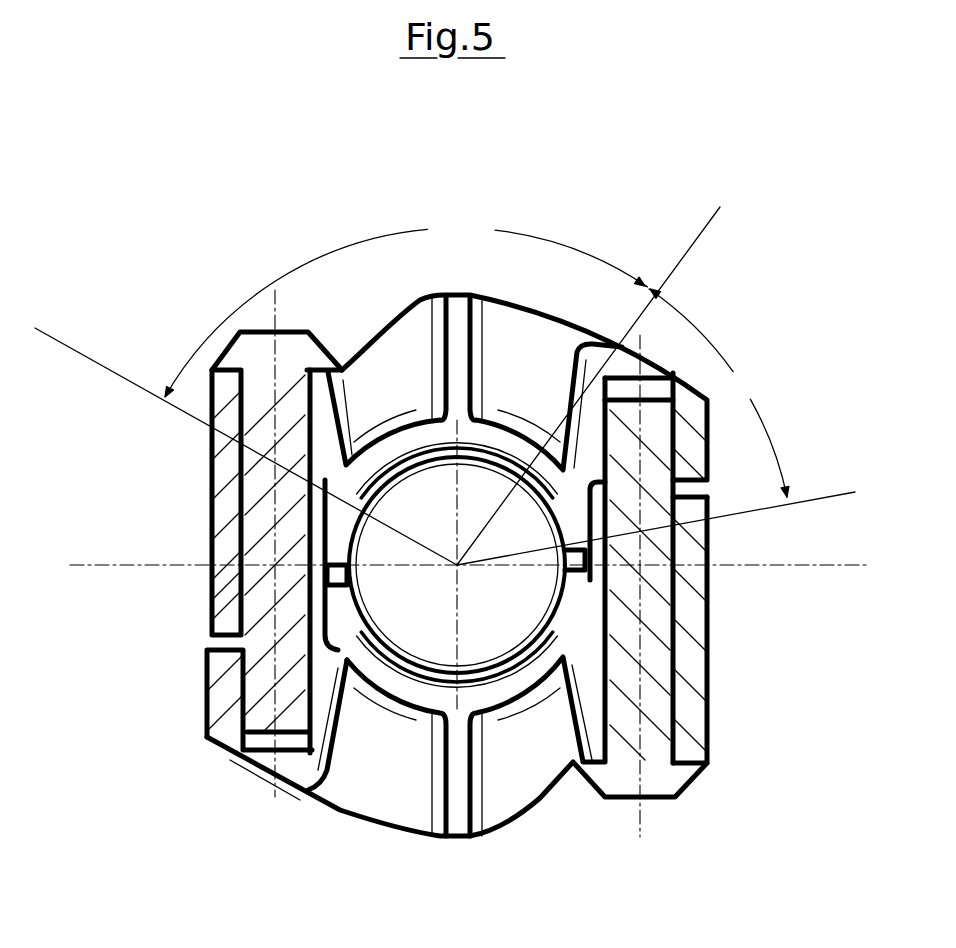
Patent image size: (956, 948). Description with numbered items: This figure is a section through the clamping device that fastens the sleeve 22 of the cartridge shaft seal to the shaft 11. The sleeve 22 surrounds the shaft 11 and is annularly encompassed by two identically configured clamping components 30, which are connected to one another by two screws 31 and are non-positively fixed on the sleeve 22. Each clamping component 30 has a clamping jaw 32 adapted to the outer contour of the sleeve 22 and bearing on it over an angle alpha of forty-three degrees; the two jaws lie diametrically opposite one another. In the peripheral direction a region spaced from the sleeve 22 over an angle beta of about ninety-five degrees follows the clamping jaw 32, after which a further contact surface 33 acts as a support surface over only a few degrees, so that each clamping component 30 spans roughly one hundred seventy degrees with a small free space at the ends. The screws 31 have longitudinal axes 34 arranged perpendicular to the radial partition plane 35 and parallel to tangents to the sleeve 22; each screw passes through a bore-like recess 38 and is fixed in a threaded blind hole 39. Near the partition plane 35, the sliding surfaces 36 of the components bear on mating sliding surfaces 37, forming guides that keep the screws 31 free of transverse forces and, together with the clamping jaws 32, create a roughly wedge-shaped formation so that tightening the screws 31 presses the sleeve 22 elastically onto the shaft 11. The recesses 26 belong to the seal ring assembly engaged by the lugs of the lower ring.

The shaft 11 is at (428, 630).
The sleeve 22 is at (513, 705).
The recesses 26 is at (296, 816).
The clamping components 30 is at (210, 478).
The screws 31 is at (680, 732).
The clamping jaws 32 is at (650, 546).
The contact surface 33 is at (213, 550).
The longitudinal axes 34 is at (640, 832).
The partition plane 35 is at (783, 568).
The sliding surface 36 is at (213, 611).
The mating sliding surfaces 37 is at (348, 758).
The bore-like recess 38 is at (677, 668).
The blind hole 39 is at (680, 392).